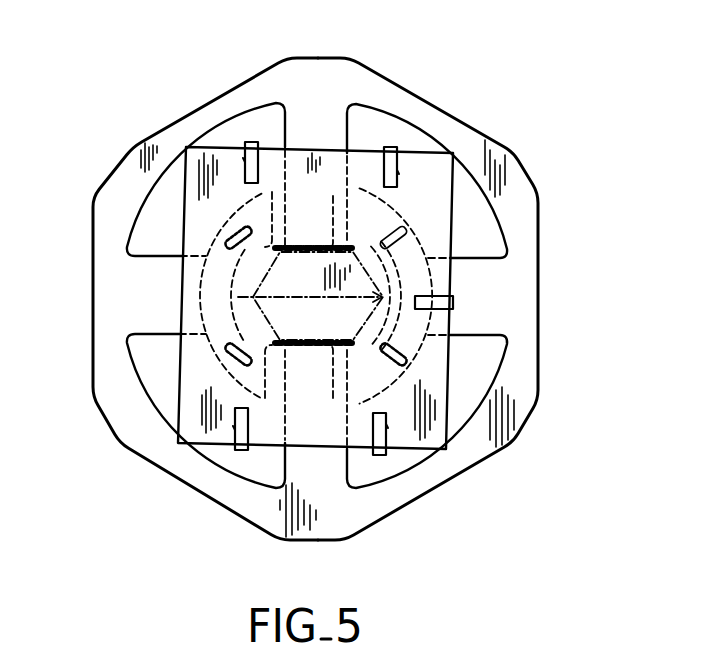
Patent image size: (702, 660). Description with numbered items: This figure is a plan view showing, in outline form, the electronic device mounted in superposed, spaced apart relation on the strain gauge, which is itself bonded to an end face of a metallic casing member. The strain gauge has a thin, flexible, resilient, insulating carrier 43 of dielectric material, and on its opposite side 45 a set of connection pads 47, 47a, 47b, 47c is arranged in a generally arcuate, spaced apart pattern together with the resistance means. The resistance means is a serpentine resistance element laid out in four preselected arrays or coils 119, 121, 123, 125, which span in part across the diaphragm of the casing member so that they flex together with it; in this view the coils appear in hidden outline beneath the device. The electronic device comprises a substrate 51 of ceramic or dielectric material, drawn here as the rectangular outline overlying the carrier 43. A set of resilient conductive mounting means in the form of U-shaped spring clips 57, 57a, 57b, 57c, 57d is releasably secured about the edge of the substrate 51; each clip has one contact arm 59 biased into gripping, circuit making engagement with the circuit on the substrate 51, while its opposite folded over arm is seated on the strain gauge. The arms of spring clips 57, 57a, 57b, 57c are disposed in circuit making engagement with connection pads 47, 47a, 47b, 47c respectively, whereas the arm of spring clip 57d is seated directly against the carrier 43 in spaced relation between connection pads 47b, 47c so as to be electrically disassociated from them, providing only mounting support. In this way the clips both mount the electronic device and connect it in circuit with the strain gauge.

The carrier 43 is at (133, 148).
The opposite side 45 is at (513, 153).
The connection pad 47 is at (150, 222).
The connection pad 47a is at (483, 230).
The connection pad 47b is at (483, 378).
The connection pad 47c is at (143, 353).
The substrate 51 is at (177, 403).
The spring clip 57 is at (253, 142).
The spring clip 57a is at (392, 147).
The spring clip 57b is at (378, 455).
The spring clip 57c is at (240, 450).
The spring clip 57d is at (455, 303).
The contact arm 59 is at (244, 160).
The coil 119 is at (310, 215).
The coil 121 is at (310, 376).
The coil 123 is at (206, 277).
The coil 125 is at (428, 277).